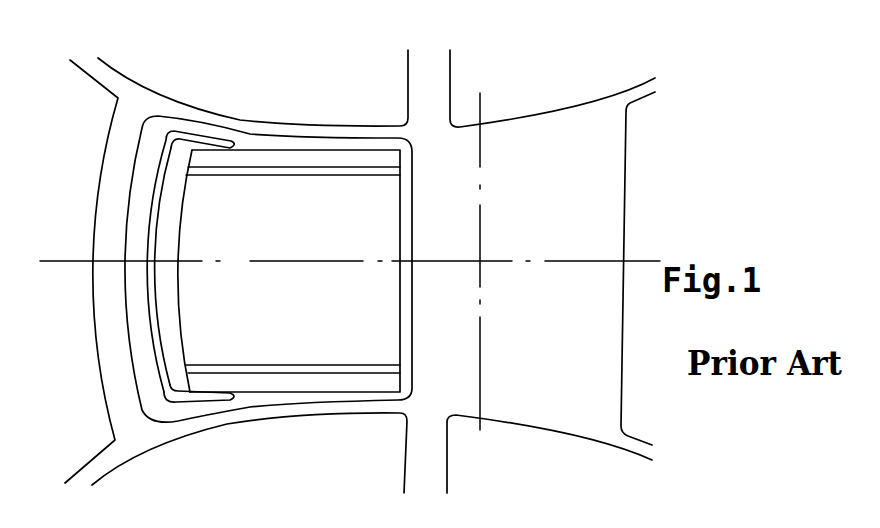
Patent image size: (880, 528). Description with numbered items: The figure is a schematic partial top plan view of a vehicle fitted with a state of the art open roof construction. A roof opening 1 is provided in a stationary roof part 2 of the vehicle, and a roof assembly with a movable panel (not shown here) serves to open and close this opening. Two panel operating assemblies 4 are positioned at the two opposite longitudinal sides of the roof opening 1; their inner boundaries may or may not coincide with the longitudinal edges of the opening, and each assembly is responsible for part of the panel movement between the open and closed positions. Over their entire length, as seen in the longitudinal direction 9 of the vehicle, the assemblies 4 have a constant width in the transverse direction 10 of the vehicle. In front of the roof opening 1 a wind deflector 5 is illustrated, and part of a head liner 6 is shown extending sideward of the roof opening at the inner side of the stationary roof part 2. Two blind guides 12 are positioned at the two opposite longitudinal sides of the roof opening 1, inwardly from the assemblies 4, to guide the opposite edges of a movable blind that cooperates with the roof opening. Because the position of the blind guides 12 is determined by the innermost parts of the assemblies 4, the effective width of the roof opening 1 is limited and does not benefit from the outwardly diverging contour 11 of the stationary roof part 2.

The roof opening 1 is at (207, 287).
The stationary roof part 2 is at (137, 107).
The panel operating assemblies 4 is at (258, 139).
The wind deflector 5 is at (155, 195).
The head liner 6 is at (164, 252).
The longitudinal direction 9 is at (588, 259).
The transverse direction 10 is at (481, 400).
The outwardly diverging contour 11 is at (183, 103).
The blind guides 12 is at (313, 173).